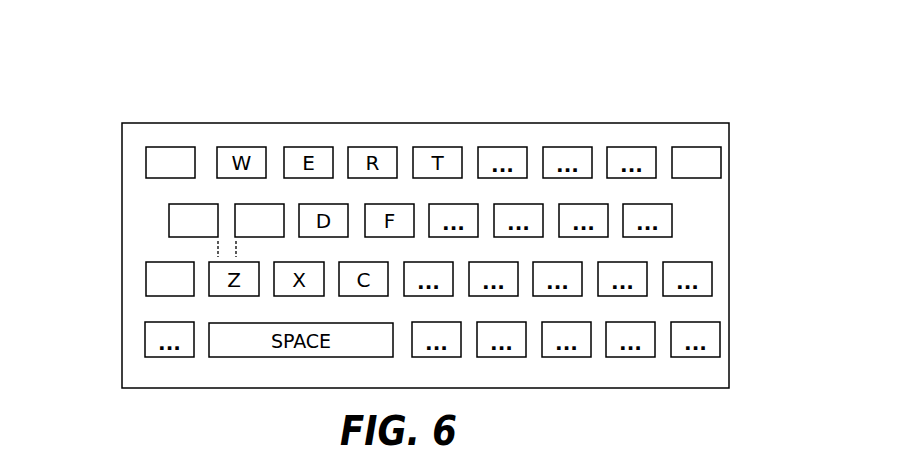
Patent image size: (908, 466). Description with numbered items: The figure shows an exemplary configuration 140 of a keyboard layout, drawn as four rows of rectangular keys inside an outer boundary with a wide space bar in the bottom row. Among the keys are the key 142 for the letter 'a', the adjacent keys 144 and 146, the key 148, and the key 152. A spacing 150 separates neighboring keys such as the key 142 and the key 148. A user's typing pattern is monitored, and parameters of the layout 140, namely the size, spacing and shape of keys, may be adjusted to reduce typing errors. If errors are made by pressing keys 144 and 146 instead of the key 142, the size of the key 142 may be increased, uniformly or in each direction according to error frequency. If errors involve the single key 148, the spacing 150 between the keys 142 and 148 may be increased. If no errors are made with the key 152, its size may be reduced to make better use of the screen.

The layout configuration 140 is at (727, 68).
The key 142 is at (169, 225).
The key 144 is at (146, 165).
The key 146 is at (146, 282).
The key 148 is at (270, 203).
The spacing 150 is at (219, 249).
The key 152 is at (721, 164).